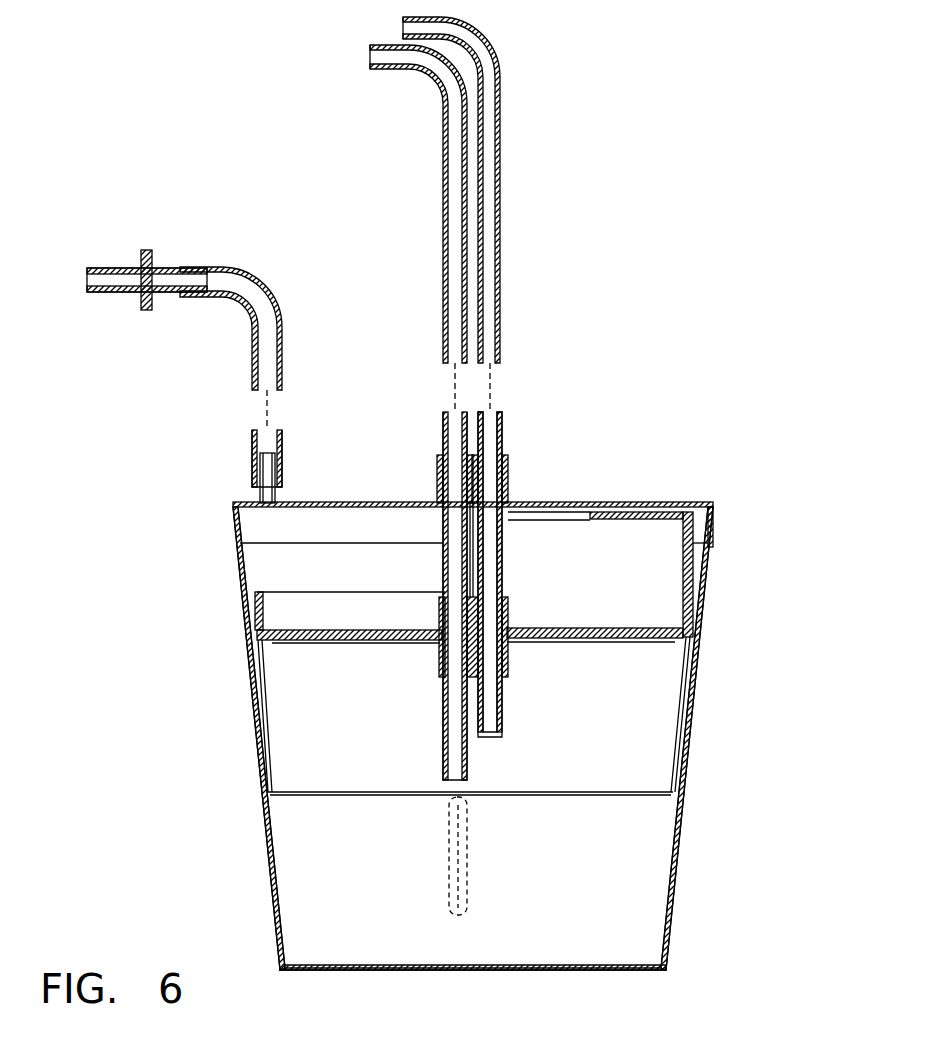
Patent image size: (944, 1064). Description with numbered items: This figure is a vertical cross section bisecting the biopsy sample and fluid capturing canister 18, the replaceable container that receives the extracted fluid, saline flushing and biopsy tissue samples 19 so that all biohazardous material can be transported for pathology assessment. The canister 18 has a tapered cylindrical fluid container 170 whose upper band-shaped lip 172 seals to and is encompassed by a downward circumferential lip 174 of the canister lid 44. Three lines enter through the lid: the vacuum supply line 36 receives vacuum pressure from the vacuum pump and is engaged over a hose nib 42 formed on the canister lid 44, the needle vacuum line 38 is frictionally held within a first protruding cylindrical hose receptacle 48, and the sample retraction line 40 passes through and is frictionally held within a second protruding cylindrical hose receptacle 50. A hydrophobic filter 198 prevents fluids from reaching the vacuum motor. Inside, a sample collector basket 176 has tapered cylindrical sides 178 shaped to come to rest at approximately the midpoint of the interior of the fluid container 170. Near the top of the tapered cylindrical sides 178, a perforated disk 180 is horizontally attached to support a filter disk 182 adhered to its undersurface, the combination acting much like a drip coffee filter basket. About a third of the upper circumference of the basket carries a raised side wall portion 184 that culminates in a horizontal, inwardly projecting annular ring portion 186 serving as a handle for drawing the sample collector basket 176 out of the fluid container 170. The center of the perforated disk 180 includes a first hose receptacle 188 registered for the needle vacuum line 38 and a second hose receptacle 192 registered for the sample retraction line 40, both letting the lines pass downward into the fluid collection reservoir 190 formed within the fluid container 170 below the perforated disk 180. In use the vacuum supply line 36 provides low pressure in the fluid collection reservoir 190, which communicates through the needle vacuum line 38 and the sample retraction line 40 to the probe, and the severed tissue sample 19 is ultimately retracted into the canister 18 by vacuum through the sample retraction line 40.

The biopsy sample and fluid capturing canister 18 is at (513, 738).
The biopsy tissue sample 19 is at (452, 872).
The vacuum supply line 36 is at (500, 327).
The needle vacuum line 38 is at (283, 374).
The sample retraction line 40 is at (443, 327).
The hose nib 42 is at (508, 478).
The canister lid 44 is at (525, 517).
The first protruding cylindrical hose receptacle 48 is at (282, 495).
The second protruding cylindrical hose receptacle 50 is at (438, 480).
The tapered cylindrical fluid container 170 is at (688, 758).
The band-shaped lip 172 is at (712, 504).
The downward circumferential lip 174 is at (718, 542).
The sample collector basket 176 is at (485, 719).
The tapered cylindrical sides 178 is at (270, 782).
The perforated disk 180 is at (607, 616).
The filter disk 182 is at (360, 645).
The raised side wall portion 184 is at (686, 610).
The annular ring portion 186 is at (626, 500).
The first hose receptacle 188 is at (507, 616).
The fluid collection reservoir 190 is at (575, 888).
The second hose receptacle 192 is at (440, 610).
The hydrophobic filter 198 is at (150, 252).